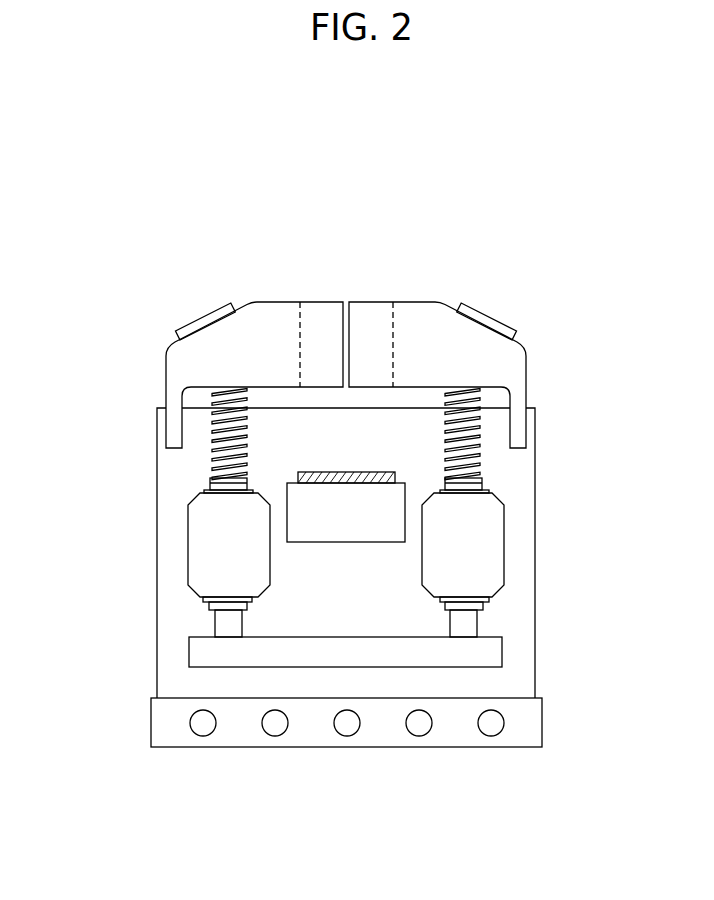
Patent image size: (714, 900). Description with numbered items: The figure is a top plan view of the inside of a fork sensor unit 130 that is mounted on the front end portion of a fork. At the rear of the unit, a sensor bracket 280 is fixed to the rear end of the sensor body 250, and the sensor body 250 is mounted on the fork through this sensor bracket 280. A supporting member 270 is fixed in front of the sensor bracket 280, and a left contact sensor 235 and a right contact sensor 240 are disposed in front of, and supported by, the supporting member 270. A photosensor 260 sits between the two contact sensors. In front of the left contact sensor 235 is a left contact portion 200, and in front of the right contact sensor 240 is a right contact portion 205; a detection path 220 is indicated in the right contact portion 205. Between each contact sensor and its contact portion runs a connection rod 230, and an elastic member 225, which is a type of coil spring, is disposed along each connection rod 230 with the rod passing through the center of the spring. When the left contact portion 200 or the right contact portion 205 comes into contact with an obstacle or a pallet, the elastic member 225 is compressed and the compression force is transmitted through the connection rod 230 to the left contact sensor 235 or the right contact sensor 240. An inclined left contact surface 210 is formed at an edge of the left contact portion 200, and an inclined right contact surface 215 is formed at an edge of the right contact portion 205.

The sensor unit 130 is at (148, 493).
The left contact portion 200 is at (280, 320).
The right contact portion 205 is at (508, 370).
The left contact surface 210 is at (206, 318).
The right contact surface 215 is at (485, 320).
The detection path 220 is at (393, 330).
The elastic member 225 is at (212, 483).
The connection rod 230 is at (214, 430).
The left contact sensor 235 is at (198, 562).
The right contact sensor 240 is at (495, 542).
The sensor body 250 is at (520, 596).
The photosensor 260 is at (302, 520).
The supporting member 270 is at (495, 650).
The sensor bracket 280 is at (520, 726).